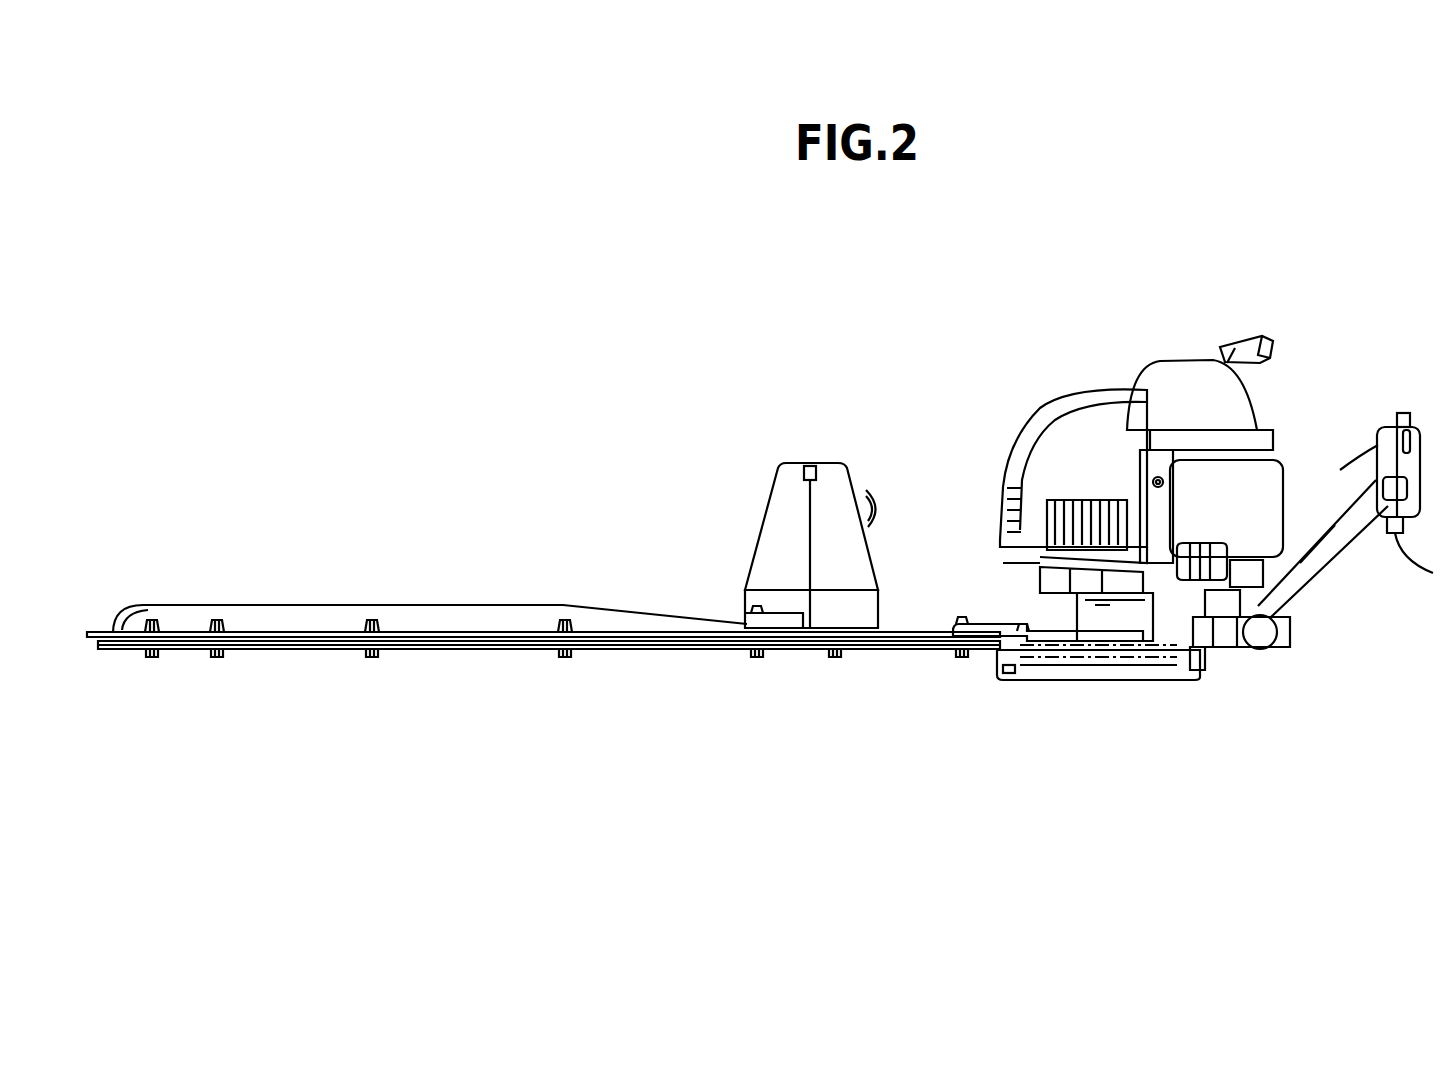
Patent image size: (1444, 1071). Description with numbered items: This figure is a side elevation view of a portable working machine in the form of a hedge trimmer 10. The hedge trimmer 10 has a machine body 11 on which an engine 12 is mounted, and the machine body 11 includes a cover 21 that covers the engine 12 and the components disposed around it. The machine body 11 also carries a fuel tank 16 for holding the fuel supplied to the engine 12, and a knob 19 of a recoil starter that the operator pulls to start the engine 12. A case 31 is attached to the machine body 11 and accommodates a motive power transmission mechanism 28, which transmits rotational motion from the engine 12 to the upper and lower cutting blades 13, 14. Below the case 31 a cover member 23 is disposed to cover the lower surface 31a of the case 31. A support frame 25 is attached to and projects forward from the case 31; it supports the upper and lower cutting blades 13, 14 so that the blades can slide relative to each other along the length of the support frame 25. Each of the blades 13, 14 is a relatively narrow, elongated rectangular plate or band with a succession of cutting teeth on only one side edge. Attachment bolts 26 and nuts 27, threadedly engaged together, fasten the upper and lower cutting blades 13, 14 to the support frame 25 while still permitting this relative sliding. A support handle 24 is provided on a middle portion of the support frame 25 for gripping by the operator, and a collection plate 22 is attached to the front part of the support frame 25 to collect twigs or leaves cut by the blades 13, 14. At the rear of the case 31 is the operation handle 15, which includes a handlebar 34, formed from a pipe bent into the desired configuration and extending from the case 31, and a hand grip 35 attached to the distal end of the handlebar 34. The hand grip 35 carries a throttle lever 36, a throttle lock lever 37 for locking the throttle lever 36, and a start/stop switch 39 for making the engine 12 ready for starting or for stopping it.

The hedge trimmer 10 is at (647, 291).
The machine body 11 is at (1078, 595).
The engine 12 is at (1223, 670).
The upper cutting blade 13 is at (897, 637).
The lower cutting blade 14 is at (913, 650).
The operation handle 15 is at (1358, 578).
The fuel tank 16 is at (1282, 455).
The knob of recoil starter 19 is at (1243, 330).
The cover 21 is at (1040, 412).
The collection plate 22 is at (455, 605).
The cover member 23 is at (1167, 680).
The support handle 24 is at (863, 483).
The support frame 25 is at (927, 633).
The attachment bolts 26 is at (152, 657).
The nuts 27 is at (158, 618).
The motive power transmission mechanism 28 is at (1134, 687).
The case 31 is at (1290, 670).
The lower surface of the case 31a is at (1200, 670).
The handlebar 34 is at (1350, 540).
The hand grip 35 is at (1387, 427).
The throttle lever 36 is at (1400, 533).
The throttle lock lever 37 is at (1375, 432).
The start/stop switch 39 is at (1404, 413).